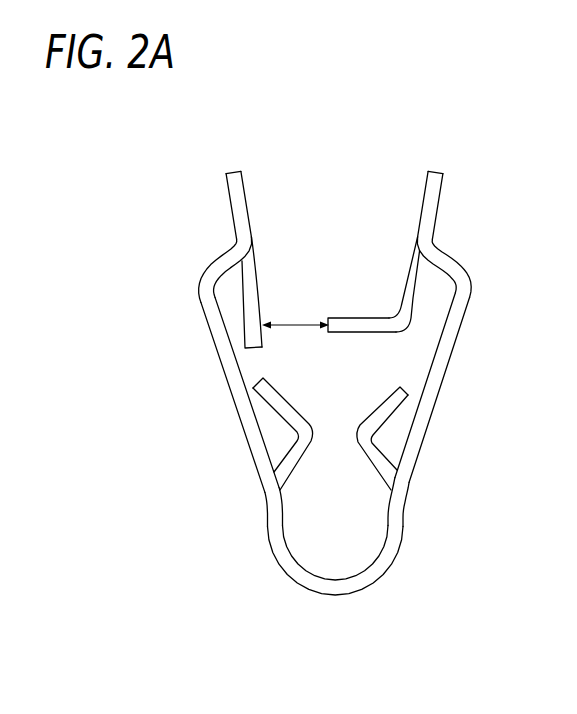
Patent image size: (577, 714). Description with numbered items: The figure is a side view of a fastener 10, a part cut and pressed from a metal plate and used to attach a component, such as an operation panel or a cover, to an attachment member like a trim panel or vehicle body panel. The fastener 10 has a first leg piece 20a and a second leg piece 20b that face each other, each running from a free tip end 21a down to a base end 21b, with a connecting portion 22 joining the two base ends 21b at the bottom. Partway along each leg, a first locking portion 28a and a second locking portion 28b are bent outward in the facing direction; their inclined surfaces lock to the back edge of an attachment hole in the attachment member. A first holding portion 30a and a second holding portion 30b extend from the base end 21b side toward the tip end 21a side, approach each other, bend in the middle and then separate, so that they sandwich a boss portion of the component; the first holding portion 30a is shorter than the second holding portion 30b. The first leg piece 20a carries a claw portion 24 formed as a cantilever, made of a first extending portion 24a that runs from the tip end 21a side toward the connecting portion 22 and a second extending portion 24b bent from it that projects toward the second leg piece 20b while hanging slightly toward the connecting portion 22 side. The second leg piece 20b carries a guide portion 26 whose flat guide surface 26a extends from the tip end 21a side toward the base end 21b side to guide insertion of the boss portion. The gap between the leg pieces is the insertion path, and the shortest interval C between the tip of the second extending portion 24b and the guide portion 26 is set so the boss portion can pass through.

The fastener 10 is at (324, 362).
The first leg piece 20a is at (442, 365).
The second leg piece 20b is at (223, 357).
The tip end 21a is at (235, 170).
The base end 21b is at (270, 549).
The connecting portion 22 is at (348, 587).
The claw portion 24 is at (432, 245).
The first extending portion 24a is at (410, 265).
The second extending portion 24b is at (361, 318).
The guide portion 26 is at (221, 262).
The guide surface 26a is at (268, 278).
The first locking portion 28a is at (450, 258).
The second locking portion 28b is at (218, 265).
The first holding portion 30a is at (370, 437).
The second holding portion 30b is at (303, 436).
The shortest interval C is at (298, 322).